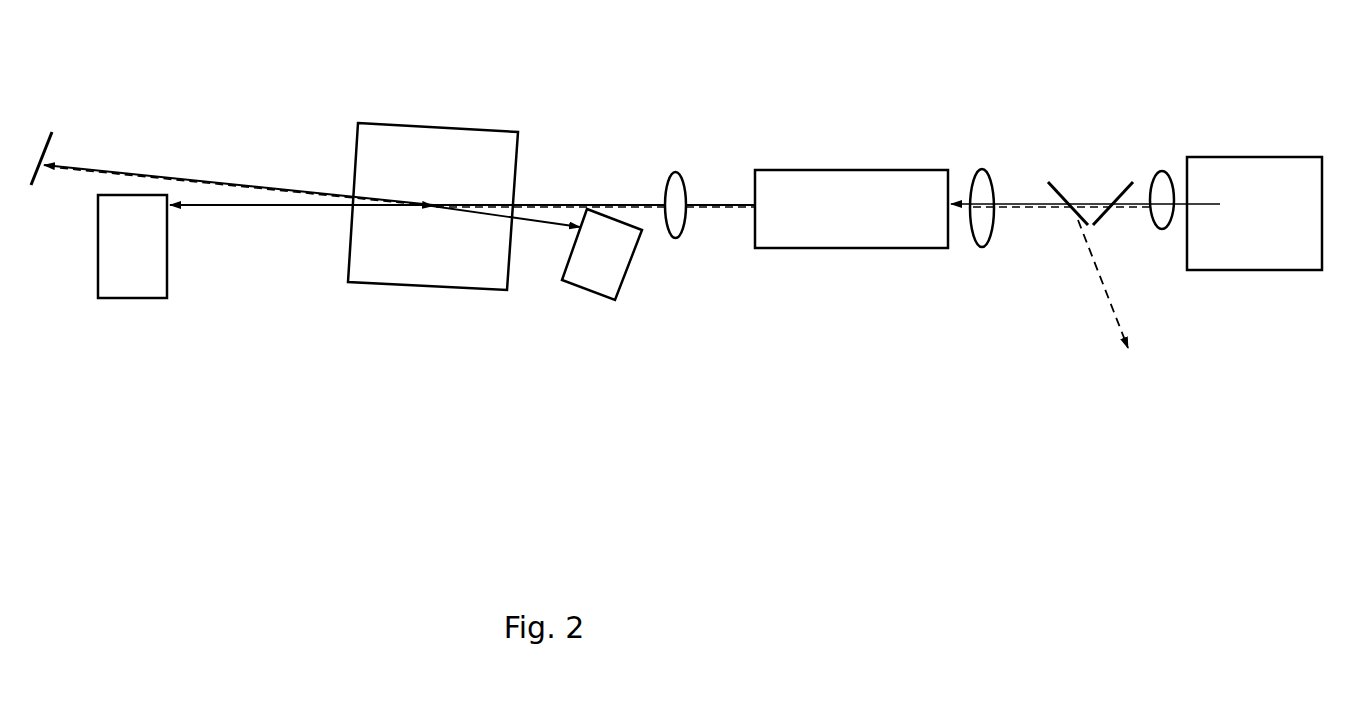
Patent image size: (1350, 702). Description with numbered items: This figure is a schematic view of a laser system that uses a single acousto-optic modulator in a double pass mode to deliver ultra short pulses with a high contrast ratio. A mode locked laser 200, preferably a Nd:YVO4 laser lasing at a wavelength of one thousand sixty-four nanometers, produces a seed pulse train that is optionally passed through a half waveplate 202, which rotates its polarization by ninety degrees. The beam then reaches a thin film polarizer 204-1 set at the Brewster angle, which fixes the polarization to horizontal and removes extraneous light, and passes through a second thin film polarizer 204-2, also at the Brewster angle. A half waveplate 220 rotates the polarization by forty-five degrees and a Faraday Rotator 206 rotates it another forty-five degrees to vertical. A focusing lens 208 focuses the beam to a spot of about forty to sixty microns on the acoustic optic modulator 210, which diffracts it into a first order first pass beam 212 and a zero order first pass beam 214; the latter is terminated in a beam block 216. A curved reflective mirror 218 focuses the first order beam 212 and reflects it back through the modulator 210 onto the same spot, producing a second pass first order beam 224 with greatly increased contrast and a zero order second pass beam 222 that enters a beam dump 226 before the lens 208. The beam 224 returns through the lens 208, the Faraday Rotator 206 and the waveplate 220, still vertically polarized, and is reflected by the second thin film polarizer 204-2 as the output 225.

The mode locked laser 200 is at (1254, 213).
The half waveplate 202 is at (1164, 166).
The thin film polarizer 204-1 is at (1117, 190).
The second thin film polarizer 204-2 is at (1072, 217).
The Faraday Rotator 206 is at (851, 209).
The focusing lens 208 is at (684, 172).
The acoustic optic modulator 210 is at (433, 206).
The first order first pass beam 212 is at (155, 172).
The zero order first pass beam 214 is at (257, 218).
The beam block 216 is at (132, 246).
The curved reflective mirror 218 is at (52, 131).
The half waveplate 220 is at (982, 158).
The zero order second pass beam 222 is at (529, 219).
The second pass first order beam 224 is at (564, 202).
The output 225 is at (1116, 318).
The beam dump 226 is at (602, 254).